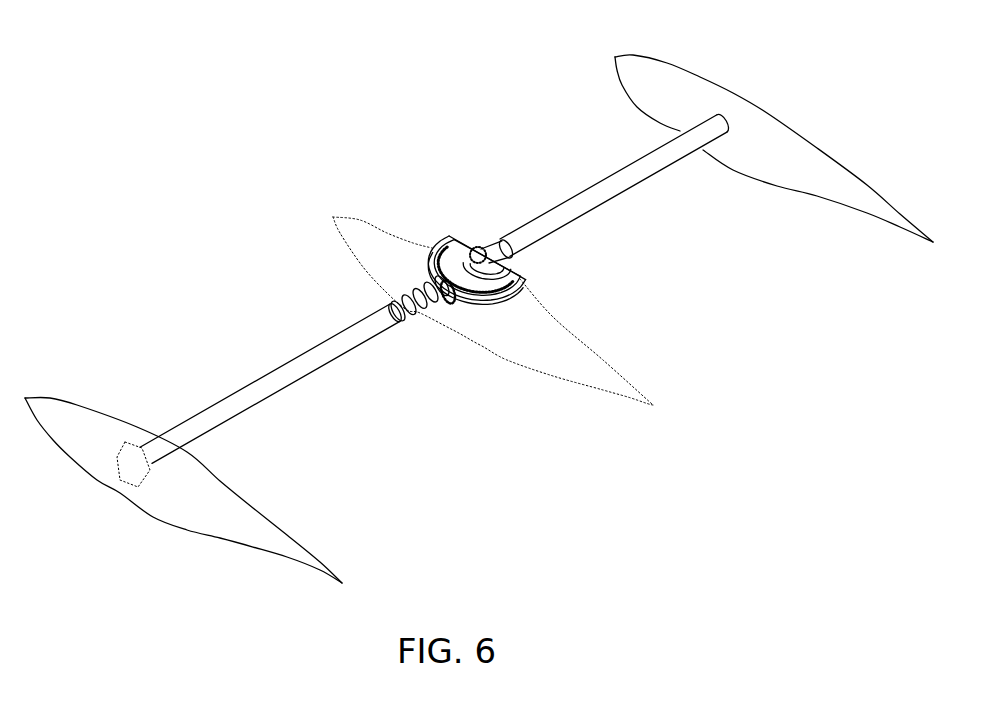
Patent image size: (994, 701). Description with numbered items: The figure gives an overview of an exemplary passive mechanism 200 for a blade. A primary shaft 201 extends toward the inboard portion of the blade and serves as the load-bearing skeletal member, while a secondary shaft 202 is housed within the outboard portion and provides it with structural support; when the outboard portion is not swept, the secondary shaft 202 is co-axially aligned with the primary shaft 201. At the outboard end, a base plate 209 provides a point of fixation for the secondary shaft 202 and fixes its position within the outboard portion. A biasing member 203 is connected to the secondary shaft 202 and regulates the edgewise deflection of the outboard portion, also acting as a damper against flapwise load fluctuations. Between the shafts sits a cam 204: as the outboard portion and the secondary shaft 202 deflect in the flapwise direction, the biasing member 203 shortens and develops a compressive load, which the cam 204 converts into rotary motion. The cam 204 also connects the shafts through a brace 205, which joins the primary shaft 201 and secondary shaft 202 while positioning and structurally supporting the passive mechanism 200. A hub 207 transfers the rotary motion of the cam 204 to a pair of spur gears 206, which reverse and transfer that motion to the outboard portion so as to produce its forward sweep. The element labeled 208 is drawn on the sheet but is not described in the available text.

The passive mechanism 200 is at (168, 134).
The primary shaft 201 is at (613, 180).
The secondary shaft 202 is at (243, 397).
The biasing member 203 is at (413, 316).
The cam 204 is at (442, 238).
The brace 205 is at (500, 234).
The spur gears 206 is at (465, 303).
The hub 207 is at (515, 268).
The first blade 208 is at (767, 137).
The base plate 209 is at (130, 468).